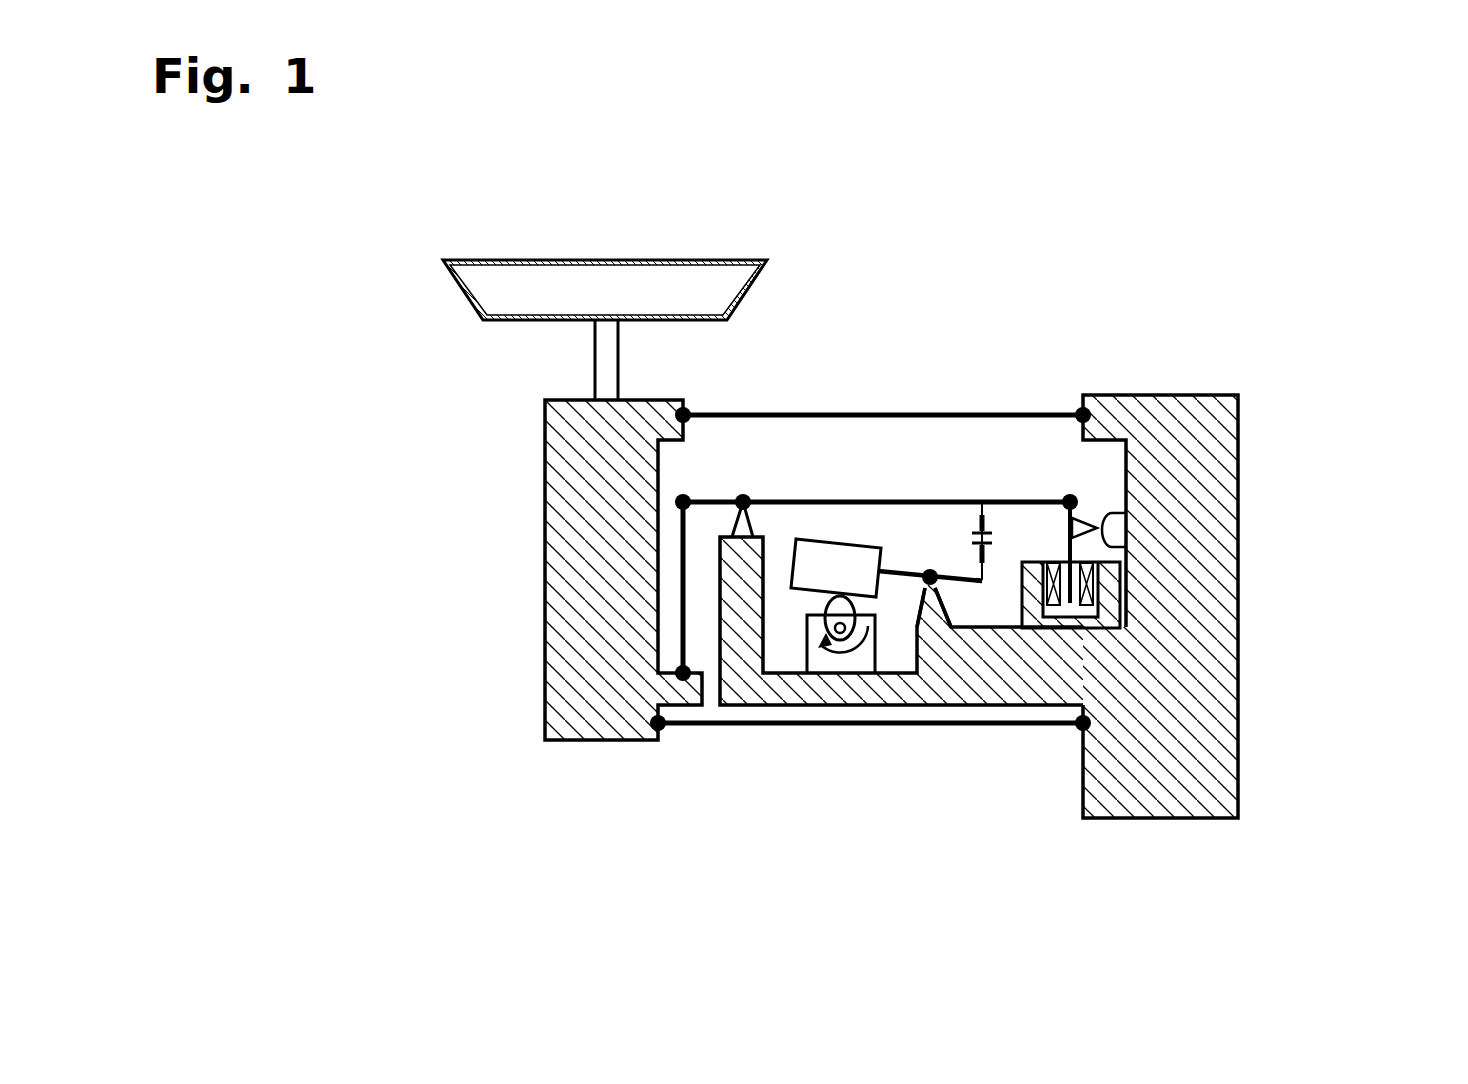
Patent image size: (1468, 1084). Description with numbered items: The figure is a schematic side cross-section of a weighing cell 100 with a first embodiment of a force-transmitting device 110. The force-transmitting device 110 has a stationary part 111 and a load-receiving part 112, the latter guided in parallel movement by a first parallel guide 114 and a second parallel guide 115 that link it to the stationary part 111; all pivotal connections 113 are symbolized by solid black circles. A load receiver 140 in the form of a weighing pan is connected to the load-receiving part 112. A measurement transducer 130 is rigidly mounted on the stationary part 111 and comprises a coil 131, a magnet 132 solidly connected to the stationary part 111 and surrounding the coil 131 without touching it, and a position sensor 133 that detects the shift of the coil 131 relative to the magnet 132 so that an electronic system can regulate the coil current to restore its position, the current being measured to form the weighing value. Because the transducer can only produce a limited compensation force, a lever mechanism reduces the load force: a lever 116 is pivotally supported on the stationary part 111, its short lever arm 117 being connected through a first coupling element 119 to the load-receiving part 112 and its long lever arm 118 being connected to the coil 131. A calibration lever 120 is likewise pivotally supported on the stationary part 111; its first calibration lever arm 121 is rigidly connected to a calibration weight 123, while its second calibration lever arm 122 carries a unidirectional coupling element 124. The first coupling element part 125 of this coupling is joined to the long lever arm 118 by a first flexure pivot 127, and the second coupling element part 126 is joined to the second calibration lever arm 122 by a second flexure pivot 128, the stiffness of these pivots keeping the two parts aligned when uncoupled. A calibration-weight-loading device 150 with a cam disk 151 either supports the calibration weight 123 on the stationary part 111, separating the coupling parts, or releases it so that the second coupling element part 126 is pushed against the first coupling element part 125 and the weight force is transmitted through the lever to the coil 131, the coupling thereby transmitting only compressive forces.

The weighing cell 100 is at (1262, 310).
The force-transmitting device 110 is at (687, 750).
The stationary part 111 is at (1188, 727).
The load-receiving part 112 is at (603, 483).
The pivotal connections 113 is at (686, 410).
The first parallel guide 114 is at (883, 413).
The second parallel guide 115 is at (750, 727).
The lever 116 is at (905, 490).
The short lever arm 117 is at (746, 498).
The long lever arm 118 is at (804, 502).
The first coupling element 119 is at (683, 583).
The calibration lever 120 is at (931, 557).
The first calibration lever arm 121 is at (888, 572).
The second calibration lever arm 122 is at (965, 582).
The calibration weight 123 is at (835, 568).
The unidirectional coupling element 124 is at (997, 540).
The first coupling element part 125 is at (985, 522).
The second coupling element part 126 is at (984, 553).
The first flexure pivot 127 is at (988, 499).
The second flexure pivot 128 is at (984, 577).
The measurement transducer 130 is at (1103, 644).
The coil 131 is at (1073, 592).
The magnet 132 is at (1110, 608).
The position sensor 133 is at (1118, 528).
The load receiver 140 is at (605, 290).
The calibration-weight-loading device 150 is at (848, 660).
The cam disk 151 is at (807, 621).